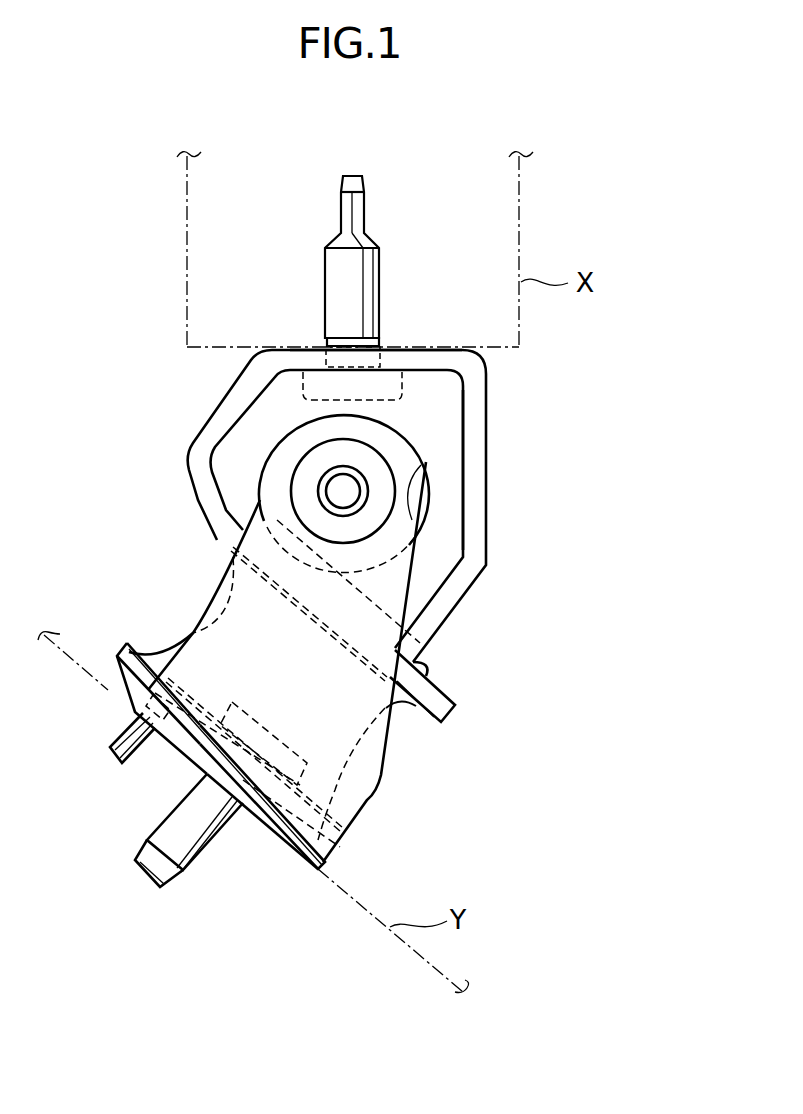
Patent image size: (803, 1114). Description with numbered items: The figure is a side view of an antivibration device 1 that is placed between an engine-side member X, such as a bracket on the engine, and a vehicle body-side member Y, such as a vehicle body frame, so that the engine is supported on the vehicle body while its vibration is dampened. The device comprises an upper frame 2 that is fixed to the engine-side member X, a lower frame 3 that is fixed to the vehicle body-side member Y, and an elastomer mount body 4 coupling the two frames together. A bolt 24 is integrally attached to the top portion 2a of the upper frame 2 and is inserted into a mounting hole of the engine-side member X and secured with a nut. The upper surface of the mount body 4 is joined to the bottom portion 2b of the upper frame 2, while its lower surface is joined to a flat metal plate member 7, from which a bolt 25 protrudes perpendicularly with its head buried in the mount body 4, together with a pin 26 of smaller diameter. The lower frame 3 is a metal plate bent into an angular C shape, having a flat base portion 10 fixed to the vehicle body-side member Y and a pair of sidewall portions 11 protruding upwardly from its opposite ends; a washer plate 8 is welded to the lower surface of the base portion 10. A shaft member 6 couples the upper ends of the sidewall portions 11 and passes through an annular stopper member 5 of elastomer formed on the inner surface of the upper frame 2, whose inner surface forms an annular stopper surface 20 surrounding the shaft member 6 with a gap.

The antivibration device 1 is at (575, 594).
The upper frame 2 is at (500, 474).
The top portion 2a is at (401, 358).
The bottom portion 2b is at (425, 688).
The lower frame 3 is at (330, 662).
The mount body 4 is at (167, 655).
The stopper member 5 is at (440, 418).
The shaft member 6 is at (338, 490).
The plate member 7 is at (138, 666).
The washer plate 8 is at (284, 840).
The base portion 10 is at (320, 807).
The sidewall portions 11 is at (380, 600).
The annular stopper surface 20 is at (405, 492).
The bolt 24 is at (327, 272).
The bolt 25 is at (208, 845).
The pin 26 is at (123, 732).